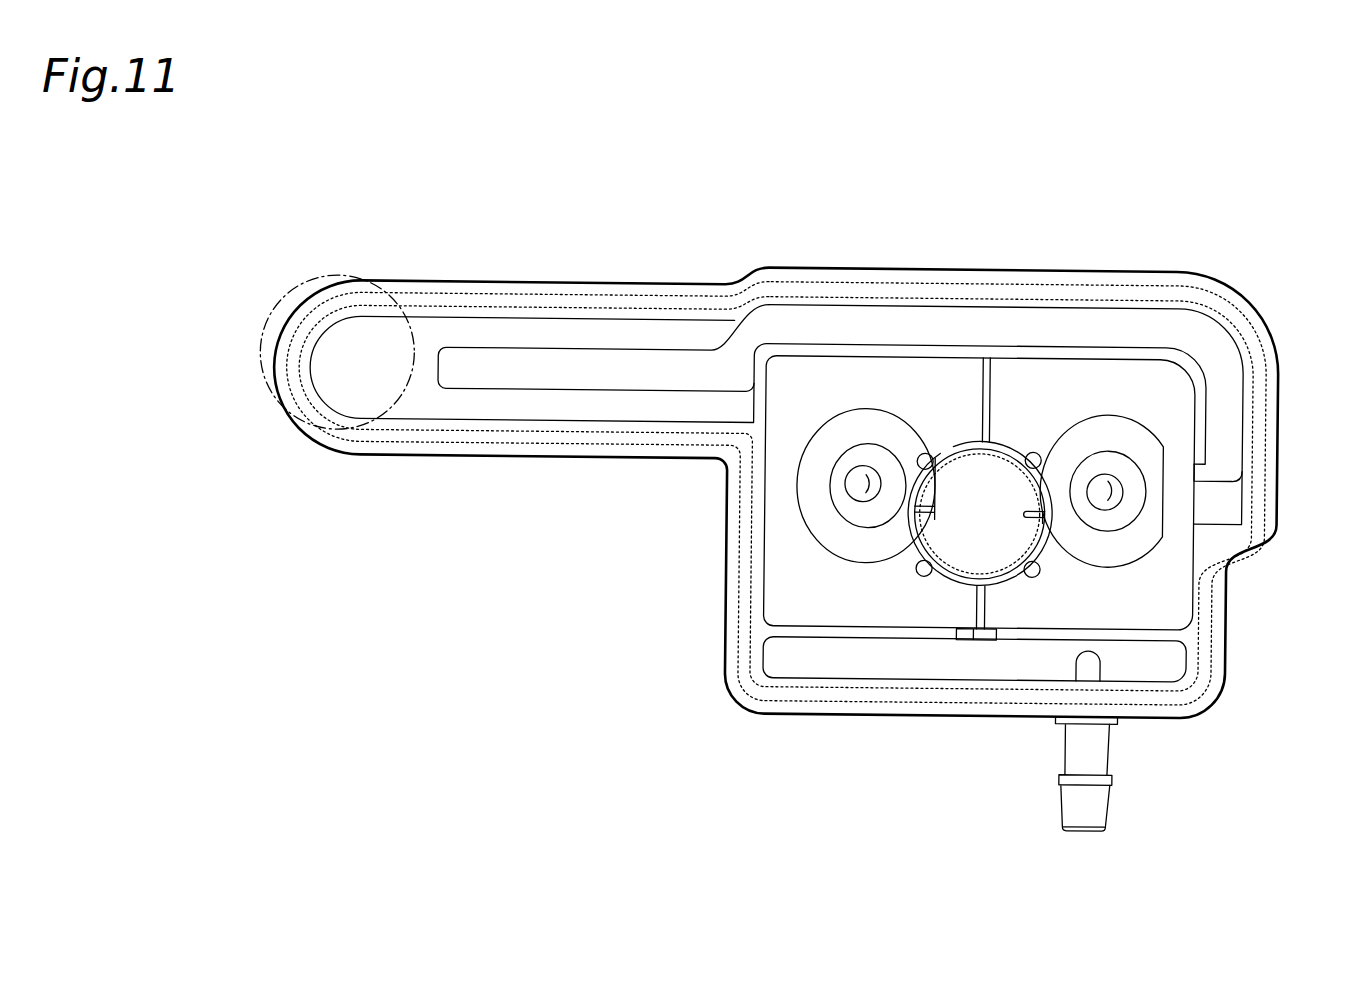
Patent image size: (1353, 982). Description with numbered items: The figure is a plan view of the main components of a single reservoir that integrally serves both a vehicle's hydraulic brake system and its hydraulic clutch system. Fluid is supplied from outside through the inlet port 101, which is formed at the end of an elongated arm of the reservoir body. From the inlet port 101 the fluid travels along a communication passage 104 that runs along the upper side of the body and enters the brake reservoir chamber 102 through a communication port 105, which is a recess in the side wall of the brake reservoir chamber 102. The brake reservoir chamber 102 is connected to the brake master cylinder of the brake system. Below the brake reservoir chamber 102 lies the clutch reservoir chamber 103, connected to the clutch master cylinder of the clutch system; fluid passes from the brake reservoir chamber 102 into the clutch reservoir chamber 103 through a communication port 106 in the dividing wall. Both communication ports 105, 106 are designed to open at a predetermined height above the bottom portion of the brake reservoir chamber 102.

The inlet port 101 is at (297, 292).
The brake reservoir chamber 102 is at (780, 572).
The clutch reservoir chamber 103 is at (787, 655).
The communication passage 104 is at (982, 330).
The communication port 105 is at (1235, 475).
The communication port 106 is at (976, 640).